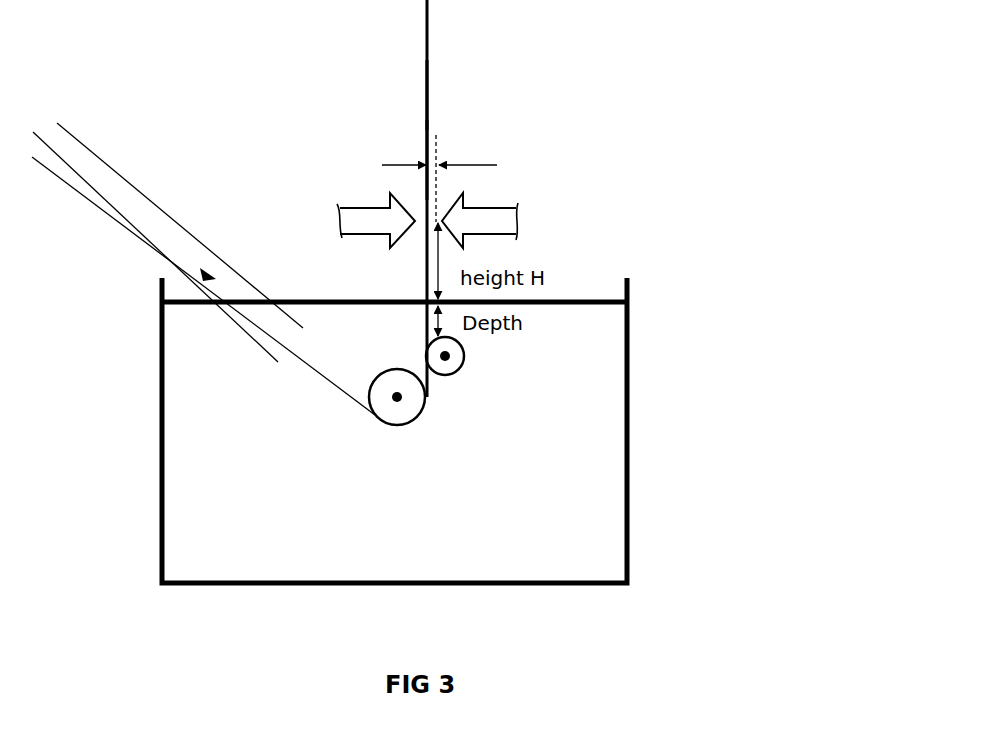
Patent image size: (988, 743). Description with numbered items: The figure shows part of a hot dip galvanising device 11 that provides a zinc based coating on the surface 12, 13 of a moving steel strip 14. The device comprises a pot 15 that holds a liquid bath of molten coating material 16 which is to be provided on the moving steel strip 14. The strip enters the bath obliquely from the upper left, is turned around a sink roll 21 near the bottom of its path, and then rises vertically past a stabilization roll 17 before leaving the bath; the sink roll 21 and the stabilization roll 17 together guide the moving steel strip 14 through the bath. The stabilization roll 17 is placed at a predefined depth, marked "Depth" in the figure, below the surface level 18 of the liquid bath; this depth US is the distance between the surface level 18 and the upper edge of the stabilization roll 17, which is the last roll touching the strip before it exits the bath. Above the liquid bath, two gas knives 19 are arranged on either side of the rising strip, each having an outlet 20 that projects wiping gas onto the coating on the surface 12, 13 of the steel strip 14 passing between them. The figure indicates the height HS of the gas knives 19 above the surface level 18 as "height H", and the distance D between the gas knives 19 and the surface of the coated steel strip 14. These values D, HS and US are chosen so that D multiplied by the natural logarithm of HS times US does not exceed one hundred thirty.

The hot dip galvanising device 11 is at (648, 140).
The surface of the moving steel strip 12 is at (430, 63).
The surface of the moving steel strip 13 is at (424, 93).
The moving steel strip 14 is at (430, 118).
The pot 15 is at (634, 396).
The liquid bath of molten coating material 16 is at (540, 508).
The stabilization roll 17 is at (446, 378).
The surface level of the liquid bath 18 is at (581, 298).
The gas knife 19 is at (372, 245).
The outlet 20 is at (416, 194).
The sink roll 21 is at (404, 413).